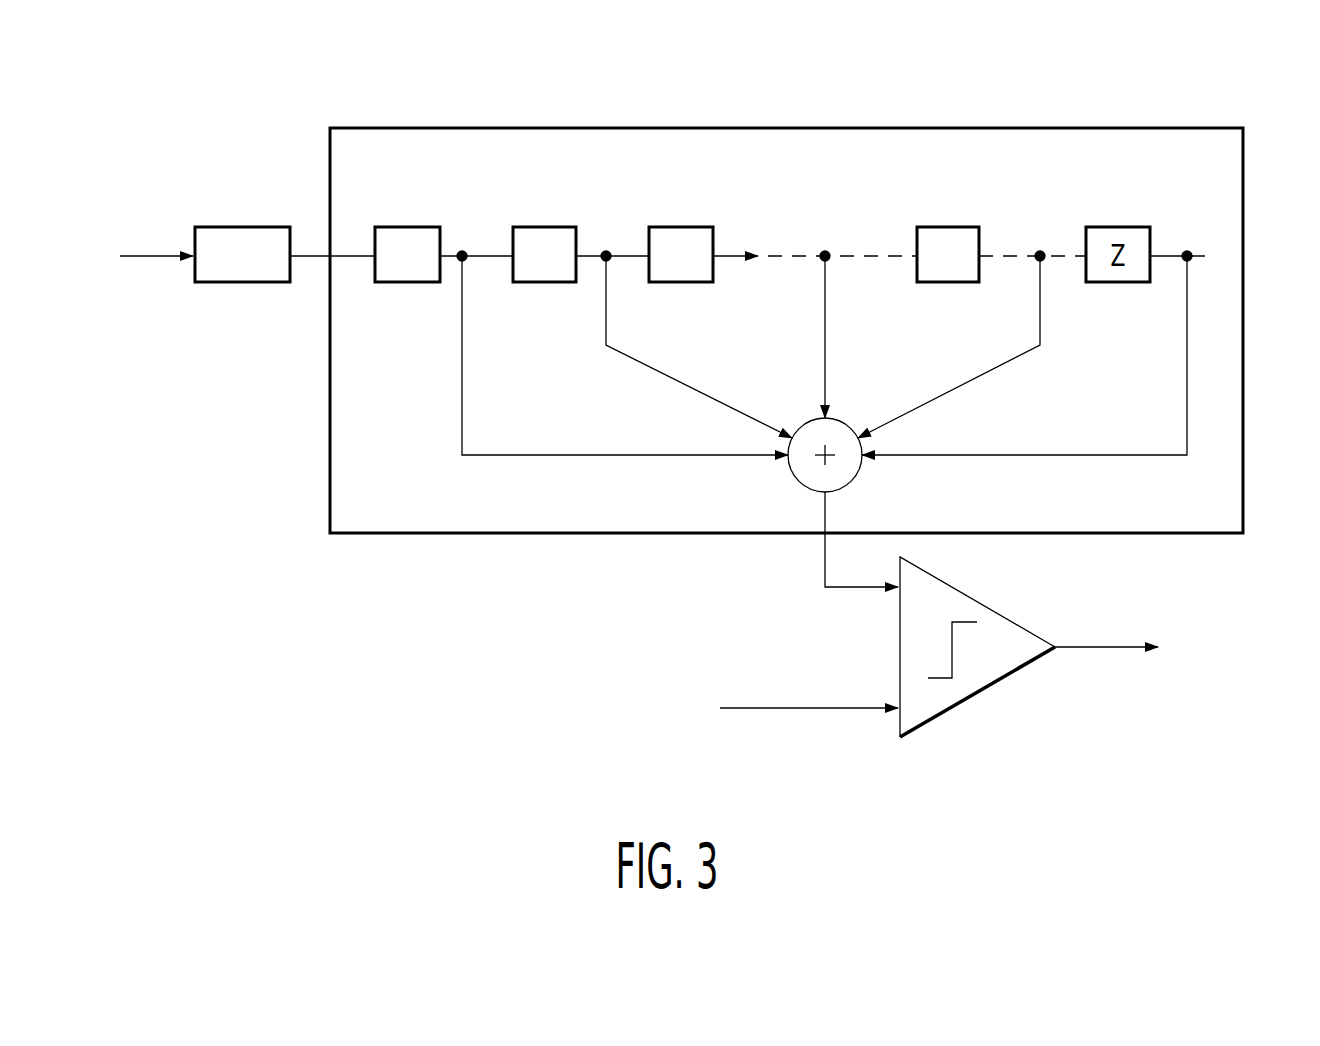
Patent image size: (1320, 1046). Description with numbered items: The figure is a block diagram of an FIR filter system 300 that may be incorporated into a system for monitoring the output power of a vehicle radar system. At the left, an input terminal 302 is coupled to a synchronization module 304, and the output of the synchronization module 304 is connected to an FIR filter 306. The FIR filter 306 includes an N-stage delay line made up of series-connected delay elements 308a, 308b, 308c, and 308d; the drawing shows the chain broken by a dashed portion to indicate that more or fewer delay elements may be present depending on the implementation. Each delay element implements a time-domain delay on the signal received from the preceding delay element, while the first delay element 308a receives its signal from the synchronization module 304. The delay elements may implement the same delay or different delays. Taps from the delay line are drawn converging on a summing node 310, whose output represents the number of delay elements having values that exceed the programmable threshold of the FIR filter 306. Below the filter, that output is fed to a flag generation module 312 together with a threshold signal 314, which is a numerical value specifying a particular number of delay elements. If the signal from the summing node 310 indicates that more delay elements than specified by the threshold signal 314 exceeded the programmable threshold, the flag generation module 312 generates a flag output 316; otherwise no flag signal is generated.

The FIR filter system 300 is at (1222, 112).
The input terminal 302 is at (152, 254).
The synchronization module 304 is at (258, 226).
The FIR filter 306 is at (1245, 266).
The delay element 308a is at (424, 226).
The delay element 308b is at (560, 226).
The delay element 308c is at (698, 226).
The delay element 308d is at (955, 226).
The summing node 310 is at (805, 487).
The flag generation module 312 is at (962, 709).
The threshold signal 314 is at (620, 690).
The flag output 316 is at (1203, 664).